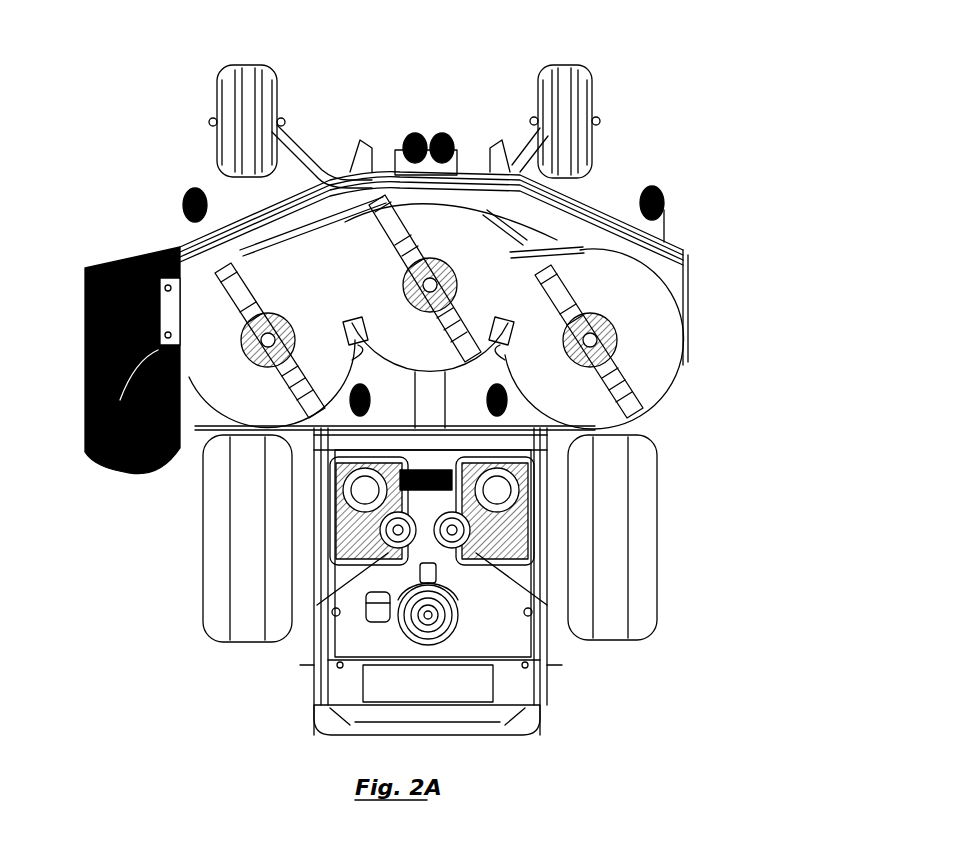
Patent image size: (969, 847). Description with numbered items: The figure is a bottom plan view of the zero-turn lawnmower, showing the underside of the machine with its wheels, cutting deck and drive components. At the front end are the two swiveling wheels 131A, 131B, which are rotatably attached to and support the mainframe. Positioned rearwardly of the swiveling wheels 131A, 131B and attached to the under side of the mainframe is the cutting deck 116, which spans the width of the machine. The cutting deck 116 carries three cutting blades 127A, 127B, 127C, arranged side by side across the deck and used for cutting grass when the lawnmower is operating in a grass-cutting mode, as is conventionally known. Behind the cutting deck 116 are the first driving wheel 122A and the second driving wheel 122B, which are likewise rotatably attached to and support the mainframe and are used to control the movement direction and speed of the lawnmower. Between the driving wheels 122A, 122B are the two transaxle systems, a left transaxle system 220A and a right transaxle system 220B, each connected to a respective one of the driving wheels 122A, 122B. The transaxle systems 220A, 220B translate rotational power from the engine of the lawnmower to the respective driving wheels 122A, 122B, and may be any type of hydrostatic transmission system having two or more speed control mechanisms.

The cutting deck 116 is at (648, 335).
The swiveling wheel 131A is at (573, 123).
The swiveling wheel 131B is at (230, 122).
The cutting blade 127A is at (620, 387).
The cutting blade 127B is at (403, 232).
The cutting blade 127C is at (275, 355).
The first driving wheel 122A is at (615, 578).
The second driving wheel 122B is at (248, 593).
The left transaxle system 220A is at (505, 555).
The right transaxle system 220B is at (362, 540).